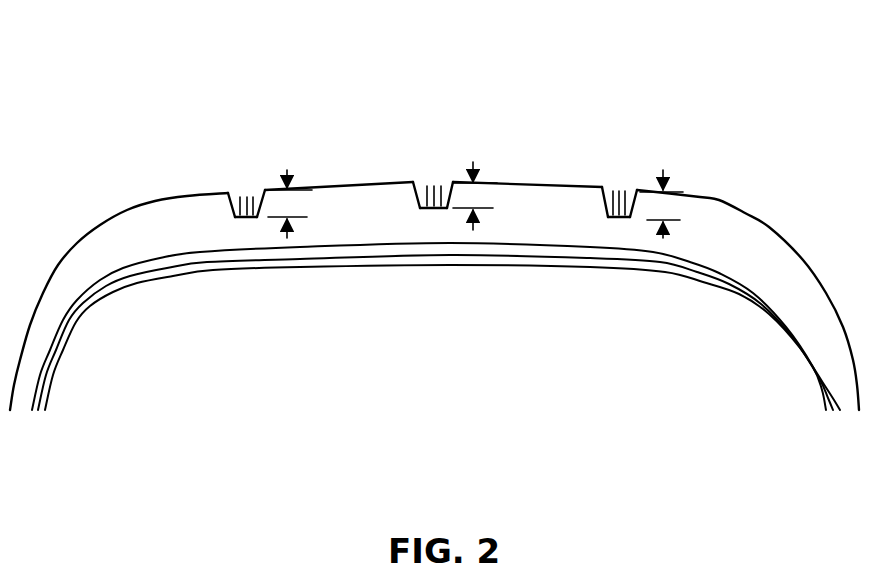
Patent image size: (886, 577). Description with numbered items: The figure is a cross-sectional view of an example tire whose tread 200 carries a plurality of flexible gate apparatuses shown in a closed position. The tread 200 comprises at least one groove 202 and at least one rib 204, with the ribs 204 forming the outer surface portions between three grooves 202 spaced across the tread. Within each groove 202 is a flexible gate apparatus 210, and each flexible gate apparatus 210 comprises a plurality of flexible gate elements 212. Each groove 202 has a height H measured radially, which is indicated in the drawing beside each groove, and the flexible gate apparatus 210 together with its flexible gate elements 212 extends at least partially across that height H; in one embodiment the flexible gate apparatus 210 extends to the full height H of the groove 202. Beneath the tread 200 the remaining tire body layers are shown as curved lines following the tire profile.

The tread 200 is at (140, 100).
The groove 202 is at (248, 217).
The rib 204 is at (195, 207).
The flexible gate apparatus 210 is at (242, 180).
The flexible gate elements 212 is at (232, 215).